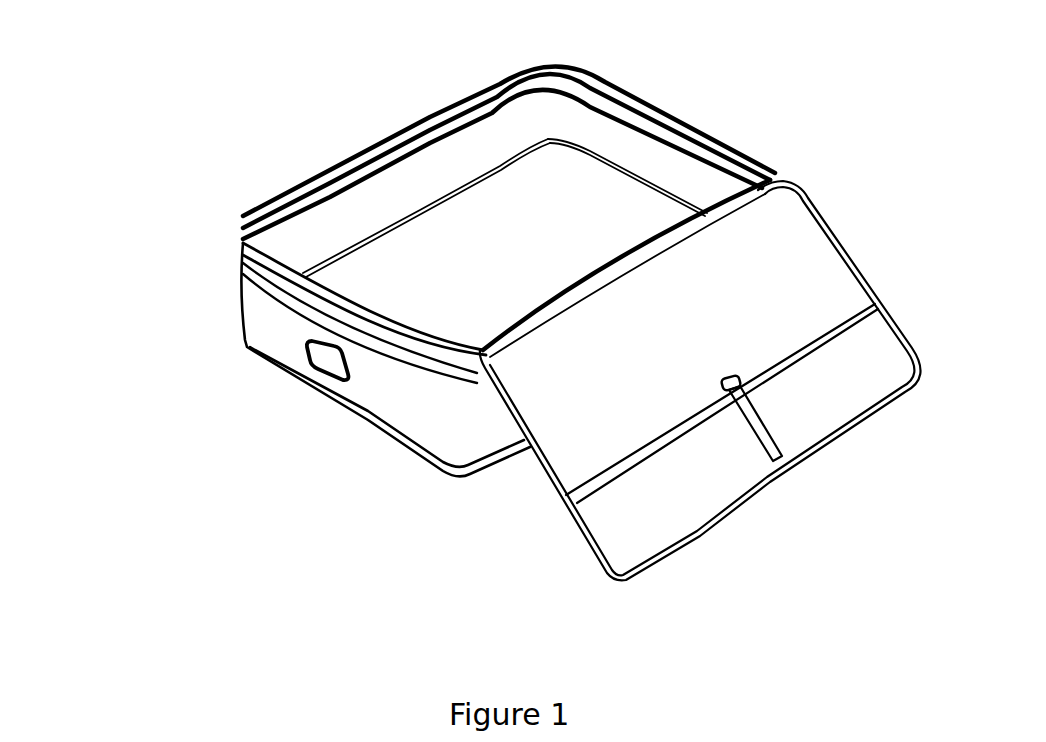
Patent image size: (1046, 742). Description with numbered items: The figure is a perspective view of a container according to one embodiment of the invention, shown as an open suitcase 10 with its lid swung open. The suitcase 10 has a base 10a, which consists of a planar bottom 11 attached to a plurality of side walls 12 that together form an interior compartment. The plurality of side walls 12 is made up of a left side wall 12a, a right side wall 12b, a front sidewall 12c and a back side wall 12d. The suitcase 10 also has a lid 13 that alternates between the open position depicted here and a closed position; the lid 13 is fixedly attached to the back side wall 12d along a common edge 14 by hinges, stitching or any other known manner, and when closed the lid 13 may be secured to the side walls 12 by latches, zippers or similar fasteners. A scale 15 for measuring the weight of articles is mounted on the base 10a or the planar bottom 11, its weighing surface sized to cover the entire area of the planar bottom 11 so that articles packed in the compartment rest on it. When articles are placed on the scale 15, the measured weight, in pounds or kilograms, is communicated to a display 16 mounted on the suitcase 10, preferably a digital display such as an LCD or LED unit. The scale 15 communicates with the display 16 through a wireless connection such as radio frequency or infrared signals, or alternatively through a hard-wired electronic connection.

The suitcase 10 is at (863, 198).
The base 10a is at (277, 308).
The planar bottom 11 is at (523, 187).
The side walls 12 is at (463, 150).
The left side wall 12a is at (350, 298).
The right side wall 12b is at (612, 168).
The front sidewall 12c is at (460, 191).
The back side wall 12d is at (577, 290).
The lid 13 is at (797, 410).
The common edge 14 is at (757, 180).
The scale 15 is at (465, 297).
The display 16 is at (321, 360).